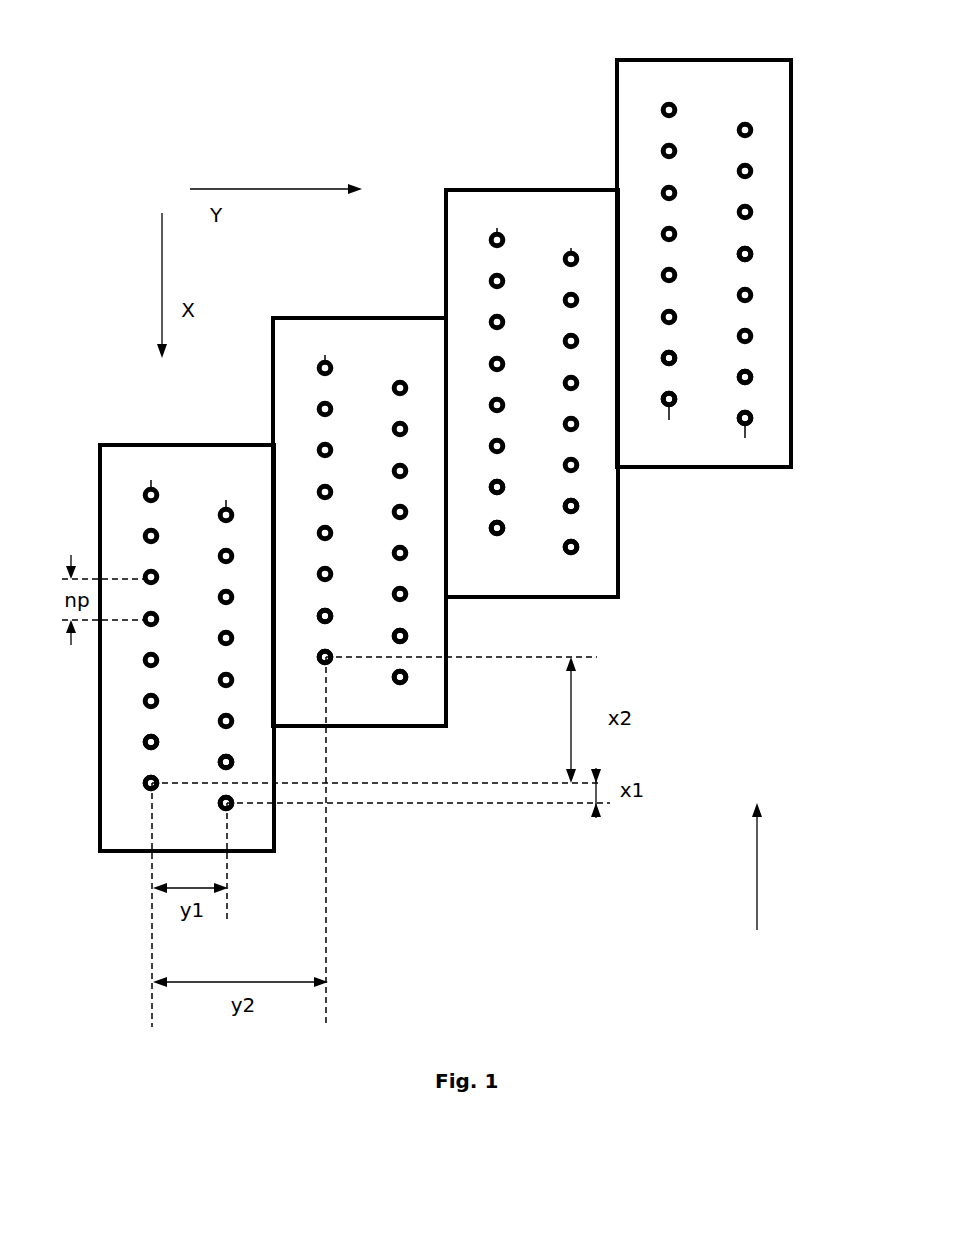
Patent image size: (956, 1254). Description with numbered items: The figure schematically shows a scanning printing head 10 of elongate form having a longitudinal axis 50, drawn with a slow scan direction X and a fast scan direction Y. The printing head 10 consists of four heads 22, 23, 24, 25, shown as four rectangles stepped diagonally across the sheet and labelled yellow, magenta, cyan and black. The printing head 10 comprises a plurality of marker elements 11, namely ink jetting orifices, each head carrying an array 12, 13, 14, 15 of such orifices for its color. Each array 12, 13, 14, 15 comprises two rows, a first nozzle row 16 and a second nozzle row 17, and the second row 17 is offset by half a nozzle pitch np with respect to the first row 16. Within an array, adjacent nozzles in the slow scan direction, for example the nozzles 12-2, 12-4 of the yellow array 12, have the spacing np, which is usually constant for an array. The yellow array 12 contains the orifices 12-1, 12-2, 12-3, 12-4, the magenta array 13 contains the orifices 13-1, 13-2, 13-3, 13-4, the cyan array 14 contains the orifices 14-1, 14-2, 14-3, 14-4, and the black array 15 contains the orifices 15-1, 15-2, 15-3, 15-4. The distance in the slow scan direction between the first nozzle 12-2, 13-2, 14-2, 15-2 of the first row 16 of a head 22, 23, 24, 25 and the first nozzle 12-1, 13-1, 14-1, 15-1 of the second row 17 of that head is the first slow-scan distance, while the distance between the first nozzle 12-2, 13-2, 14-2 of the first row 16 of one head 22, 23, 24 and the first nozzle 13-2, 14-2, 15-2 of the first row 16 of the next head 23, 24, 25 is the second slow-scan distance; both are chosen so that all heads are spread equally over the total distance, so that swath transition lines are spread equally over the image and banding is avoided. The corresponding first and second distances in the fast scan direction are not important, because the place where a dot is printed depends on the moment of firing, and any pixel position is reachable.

The scanning printing head 10 is at (610, 906).
The marker element 11 is at (748, 250).
The yellow nozzle array 12 is at (182, 648).
The magenta nozzle array 13 is at (391, 522).
The cyan nozzle array 14 is at (562, 393).
The black nozzle array 15 is at (733, 263).
The first nozzle row 16 is at (151, 480).
The second nozzle row 17 is at (226, 500).
The yellow head 22 is at (178, 442).
The magenta head 23 is at (352, 314).
The cyan head 24 is at (523, 186).
The black head 25 is at (694, 58).
The longitudinal axis 50 is at (742, 866).
The first nozzle of second row of yellow head 12-1 is at (232, 806).
The first nozzle of first row of yellow head 12-2 is at (147, 786).
The yellow ink jetting orifice 12-3 is at (233, 763).
The yellow ink jetting orifice 12-4 is at (144, 745).
The first nozzle of second row of magenta head 13-1 is at (407, 679).
The first nozzle of first row of magenta head 13-2 is at (323, 663).
The magenta ink jetting orifice 13-3 is at (407, 634).
The magenta ink jetting orifice 13-4 is at (318, 619).
The first nozzle of second row of cyan head 14-1 is at (578, 550).
The first nozzle of first row of cyan head 14-2 is at (497, 534).
The cyan ink jetting orifice 14-3 is at (578, 509).
The cyan ink jetting orifice 14-4 is at (491, 490).
The first nozzle of second row of black head 15-1 is at (753, 421).
The first nozzle of first row of black head 15-2 is at (666, 404).
The black ink jetting orifice 15-3 is at (752, 381).
The black ink jetting orifice 15-4 is at (664, 359).